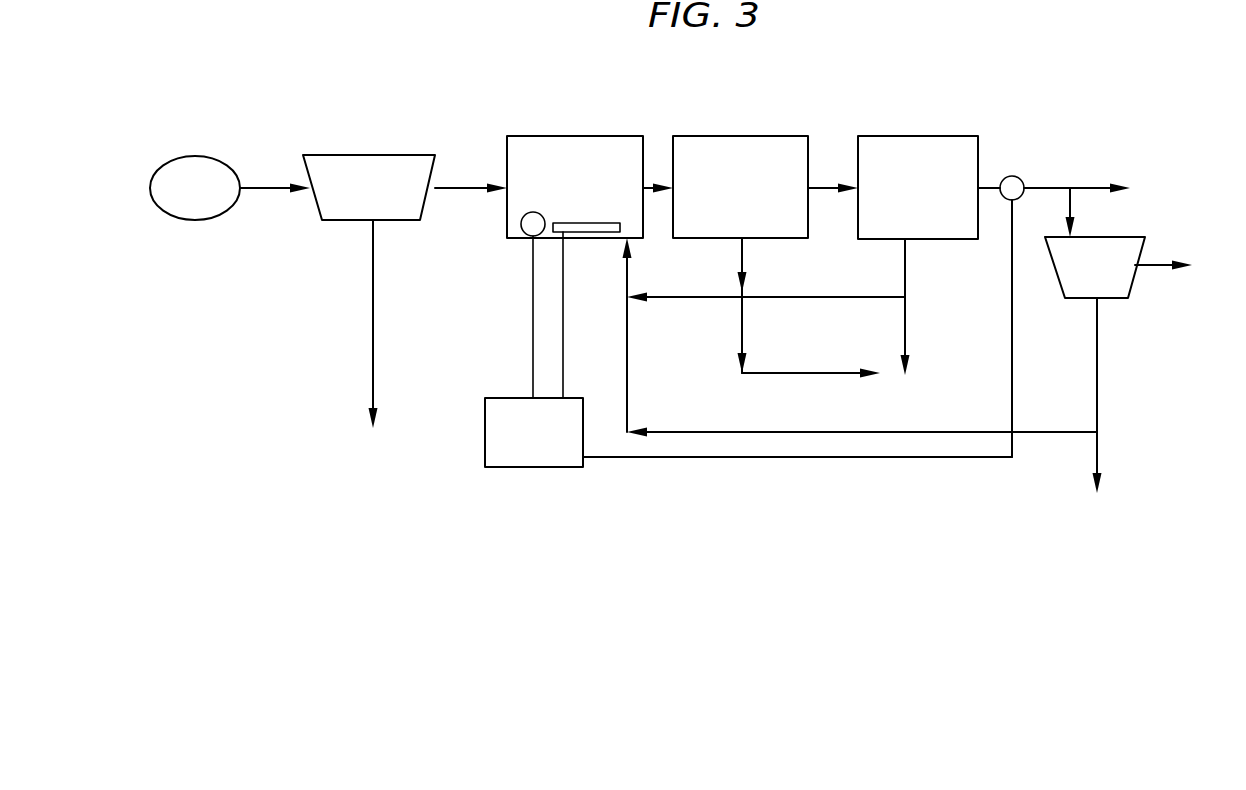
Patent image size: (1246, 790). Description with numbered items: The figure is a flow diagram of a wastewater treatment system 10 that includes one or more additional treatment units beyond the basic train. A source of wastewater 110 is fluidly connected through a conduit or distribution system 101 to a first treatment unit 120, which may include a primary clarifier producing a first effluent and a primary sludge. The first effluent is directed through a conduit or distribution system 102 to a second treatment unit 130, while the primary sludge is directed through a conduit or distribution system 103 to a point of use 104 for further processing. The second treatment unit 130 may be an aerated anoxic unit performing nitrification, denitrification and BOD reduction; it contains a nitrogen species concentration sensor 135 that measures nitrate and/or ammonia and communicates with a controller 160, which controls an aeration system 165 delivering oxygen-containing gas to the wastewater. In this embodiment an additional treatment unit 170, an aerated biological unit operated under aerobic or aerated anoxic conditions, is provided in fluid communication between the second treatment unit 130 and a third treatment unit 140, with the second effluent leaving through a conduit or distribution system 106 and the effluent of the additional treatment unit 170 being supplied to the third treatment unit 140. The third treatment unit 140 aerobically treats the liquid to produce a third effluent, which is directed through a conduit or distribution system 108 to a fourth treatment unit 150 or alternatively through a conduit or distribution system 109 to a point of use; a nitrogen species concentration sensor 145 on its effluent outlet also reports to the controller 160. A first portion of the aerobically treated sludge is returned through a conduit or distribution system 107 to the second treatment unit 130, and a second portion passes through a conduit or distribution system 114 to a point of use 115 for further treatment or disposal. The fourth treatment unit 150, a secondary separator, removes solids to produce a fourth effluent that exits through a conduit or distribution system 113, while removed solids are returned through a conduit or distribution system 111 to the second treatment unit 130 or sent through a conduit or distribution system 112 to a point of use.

The wastewater treatment system 10 is at (330, 68).
The source of wastewater 110 is at (178, 201).
The conduit or distribution system 101 is at (261, 185).
The first treatment unit 120 is at (354, 201).
The conduit or distribution system 102 is at (454, 185).
The conduit or distribution system 103 is at (371, 282).
The point of use 104 is at (370, 424).
The second treatment unit 130 is at (558, 198).
The nitrogen species concentration sensor 135 is at (522, 240).
The aeration system 165 is at (580, 233).
The additional treatment unit 170 is at (723, 198).
The conduit or distribution system 106 is at (824, 185).
The third treatment unit 140 is at (901, 198).
The nitrogen species concentration sensor 145 is at (1010, 176).
The conduit or distribution system 109 is at (1094, 185).
The conduit or distribution system 108 is at (1074, 200).
The fourth treatment unit 150 is at (1079, 278).
The conduit or distribution system 113 is at (1155, 280).
The conduit or distribution system 111 is at (1098, 370).
The conduit or distribution system 112 is at (1098, 455).
The controller 160 is at (517, 445).
The conduit or distribution system 107 is at (904, 275).
The conduit or distribution system 114 is at (908, 332).
The point of use 115 is at (908, 368).